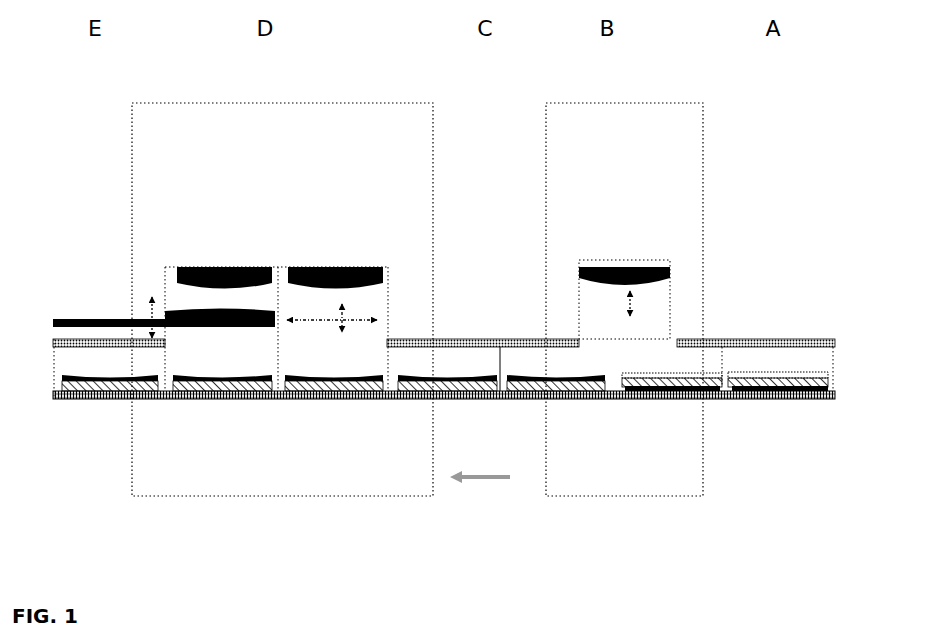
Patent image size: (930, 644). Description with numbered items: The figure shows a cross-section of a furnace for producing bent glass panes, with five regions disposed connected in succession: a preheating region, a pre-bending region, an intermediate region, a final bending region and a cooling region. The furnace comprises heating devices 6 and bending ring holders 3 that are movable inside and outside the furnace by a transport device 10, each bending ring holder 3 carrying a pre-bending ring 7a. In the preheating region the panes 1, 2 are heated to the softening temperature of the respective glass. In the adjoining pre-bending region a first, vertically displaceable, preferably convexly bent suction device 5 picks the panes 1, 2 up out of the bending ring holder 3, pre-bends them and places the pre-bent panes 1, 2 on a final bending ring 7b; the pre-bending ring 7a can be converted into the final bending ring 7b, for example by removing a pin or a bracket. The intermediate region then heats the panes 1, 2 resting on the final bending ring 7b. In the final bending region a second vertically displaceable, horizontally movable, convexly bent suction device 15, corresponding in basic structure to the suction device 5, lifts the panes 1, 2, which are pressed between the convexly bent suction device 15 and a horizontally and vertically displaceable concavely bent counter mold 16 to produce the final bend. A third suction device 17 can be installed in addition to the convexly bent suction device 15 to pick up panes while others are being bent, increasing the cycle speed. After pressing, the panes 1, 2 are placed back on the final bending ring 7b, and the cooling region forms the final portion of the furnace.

The pane 1 is at (97, 374).
The pane 2 is at (769, 364).
The bending ring holder 3 is at (787, 399).
The suction device 5 is at (673, 270).
The heating device 6 is at (116, 334).
The pre-bending ring 7a is at (617, 391).
The final bending ring 7b is at (57, 401).
The transport device 10 is at (509, 401).
The convexly bent suction device 15 is at (371, 261).
The concavely bent counter mold 16 is at (181, 304).
The third suction device 17 is at (222, 259).